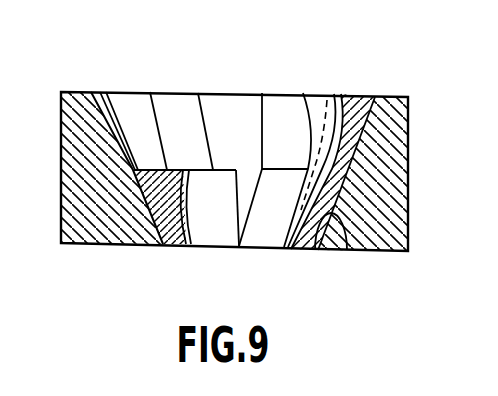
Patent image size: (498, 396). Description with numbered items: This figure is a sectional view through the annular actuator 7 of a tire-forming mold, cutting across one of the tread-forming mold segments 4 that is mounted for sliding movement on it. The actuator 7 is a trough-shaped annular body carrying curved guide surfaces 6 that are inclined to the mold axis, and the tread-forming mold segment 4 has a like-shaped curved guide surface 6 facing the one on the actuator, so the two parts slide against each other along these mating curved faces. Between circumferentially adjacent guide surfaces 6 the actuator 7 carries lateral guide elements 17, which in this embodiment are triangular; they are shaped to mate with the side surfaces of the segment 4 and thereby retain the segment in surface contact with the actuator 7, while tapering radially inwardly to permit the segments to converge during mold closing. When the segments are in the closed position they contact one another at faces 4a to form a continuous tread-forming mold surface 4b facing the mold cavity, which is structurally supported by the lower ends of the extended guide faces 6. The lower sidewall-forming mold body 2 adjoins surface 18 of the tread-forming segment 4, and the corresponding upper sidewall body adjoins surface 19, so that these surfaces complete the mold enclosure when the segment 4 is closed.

The lower sidewall-forming mold body 2 is at (335, 252).
The tread-forming mold segment 4 is at (233, 166).
The faces 4a is at (287, 131).
The continuous tread-forming mold surface 4b is at (256, 179).
The curved guide surface 6 is at (181, 164).
The actuator 7 is at (242, 140).
The lateral guide element 17 is at (227, 167).
The surface 18 is at (349, 145).
The surface 19 is at (160, 233).